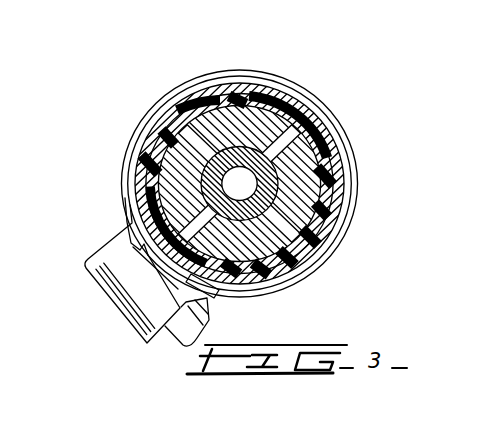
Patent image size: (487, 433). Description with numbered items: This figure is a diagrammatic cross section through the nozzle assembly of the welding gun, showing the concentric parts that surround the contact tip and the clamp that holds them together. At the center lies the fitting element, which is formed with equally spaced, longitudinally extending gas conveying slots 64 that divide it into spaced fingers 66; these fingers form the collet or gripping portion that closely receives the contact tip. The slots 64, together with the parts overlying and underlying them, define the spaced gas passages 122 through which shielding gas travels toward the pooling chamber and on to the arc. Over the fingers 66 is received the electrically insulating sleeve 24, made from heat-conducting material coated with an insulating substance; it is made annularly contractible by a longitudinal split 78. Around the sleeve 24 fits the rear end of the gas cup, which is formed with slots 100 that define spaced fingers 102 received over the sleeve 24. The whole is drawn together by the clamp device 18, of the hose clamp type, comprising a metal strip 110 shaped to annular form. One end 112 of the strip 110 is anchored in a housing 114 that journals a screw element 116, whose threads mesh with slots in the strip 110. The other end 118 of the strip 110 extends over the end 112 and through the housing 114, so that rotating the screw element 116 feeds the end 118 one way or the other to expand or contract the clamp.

The clamp device 18 is at (129, 325).
The electrically insulating sleeve 24 is at (313, 126).
The gas conveying slots 64 is at (193, 142).
The fingers 66 is at (258, 126).
The split 78 is at (240, 98).
The slots 100 is at (322, 120).
The fingers 102 is at (201, 96).
The metal strip 110 is at (341, 250).
The end of strip 112 is at (213, 290).
The housing 114 is at (101, 283).
The screw element 116 is at (182, 333).
The end of strip 118 is at (120, 236).
The gas passages 122 is at (197, 152).